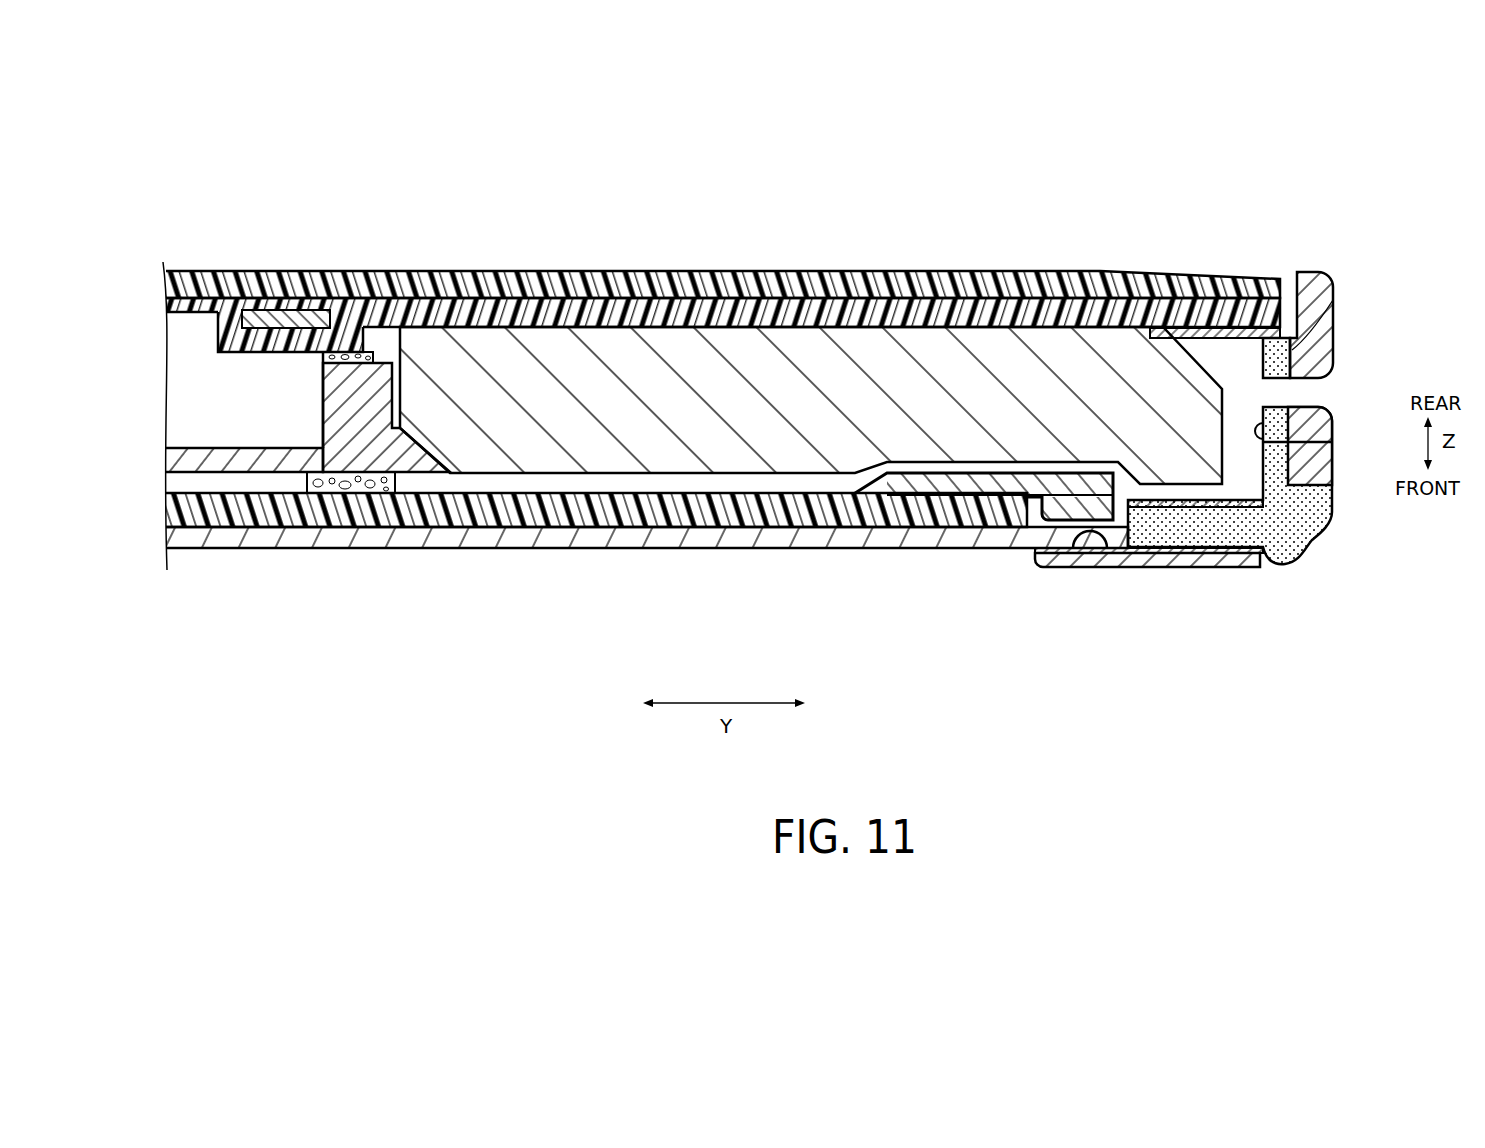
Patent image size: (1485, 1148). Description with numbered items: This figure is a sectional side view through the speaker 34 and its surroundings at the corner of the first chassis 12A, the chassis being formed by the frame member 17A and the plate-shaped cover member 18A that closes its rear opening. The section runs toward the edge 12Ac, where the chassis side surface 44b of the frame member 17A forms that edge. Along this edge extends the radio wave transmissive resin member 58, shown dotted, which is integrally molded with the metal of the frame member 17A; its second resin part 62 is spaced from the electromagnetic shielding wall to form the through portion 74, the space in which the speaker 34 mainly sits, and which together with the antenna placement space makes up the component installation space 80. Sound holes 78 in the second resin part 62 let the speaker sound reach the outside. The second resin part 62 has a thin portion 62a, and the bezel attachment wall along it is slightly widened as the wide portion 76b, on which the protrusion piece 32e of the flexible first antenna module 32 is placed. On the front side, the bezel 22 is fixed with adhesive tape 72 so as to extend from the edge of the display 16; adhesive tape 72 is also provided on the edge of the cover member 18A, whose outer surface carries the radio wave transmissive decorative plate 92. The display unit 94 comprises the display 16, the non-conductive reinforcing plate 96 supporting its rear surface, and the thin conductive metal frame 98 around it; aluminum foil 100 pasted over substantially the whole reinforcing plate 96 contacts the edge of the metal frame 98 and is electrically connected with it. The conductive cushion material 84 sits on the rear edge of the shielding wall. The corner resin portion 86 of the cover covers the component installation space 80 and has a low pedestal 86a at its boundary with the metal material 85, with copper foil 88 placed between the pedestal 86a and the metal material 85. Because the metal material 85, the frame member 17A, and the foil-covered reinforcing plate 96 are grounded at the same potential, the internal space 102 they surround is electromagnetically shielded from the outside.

The first chassis 12A is at (1351, 261).
The edge 12Ac is at (1361, 354).
The chassis side surface 44b is at (1292, 352).
The display 16 is at (480, 537).
The frame member 17A is at (228, 466).
The cover member 18A is at (880, 270).
The bezel 22 is at (1182, 565).
The first antenna module 32 is at (1195, 341).
The protrusion piece 32e is at (1178, 502).
The speaker 34 is at (811, 329).
The resin member 58 is at (1218, 528).
The second resin part 62 is at (1328, 292).
The thin portion 62a is at (1320, 440).
The adhesive tape 72 is at (1235, 325).
The through portion 74 is at (811, 329).
The component installation space 80 is at (688, 372).
The wide portion 76b is at (1245, 497).
The sound holes 78 is at (1297, 405).
The cushion material 84 is at (365, 350).
The metal material 85 is at (215, 300).
The corner resin portion 86 is at (935, 312).
The pedestal 86a is at (297, 335).
The copper foil 88 is at (247, 330).
The decorative plate 92 is at (723, 224).
The display unit 94 is at (647, 616).
The reinforcing plate 96 is at (616, 522).
The metal frame 98 is at (965, 475).
The aluminum foil 100 is at (730, 497).
The internal space 102 is at (192, 380).